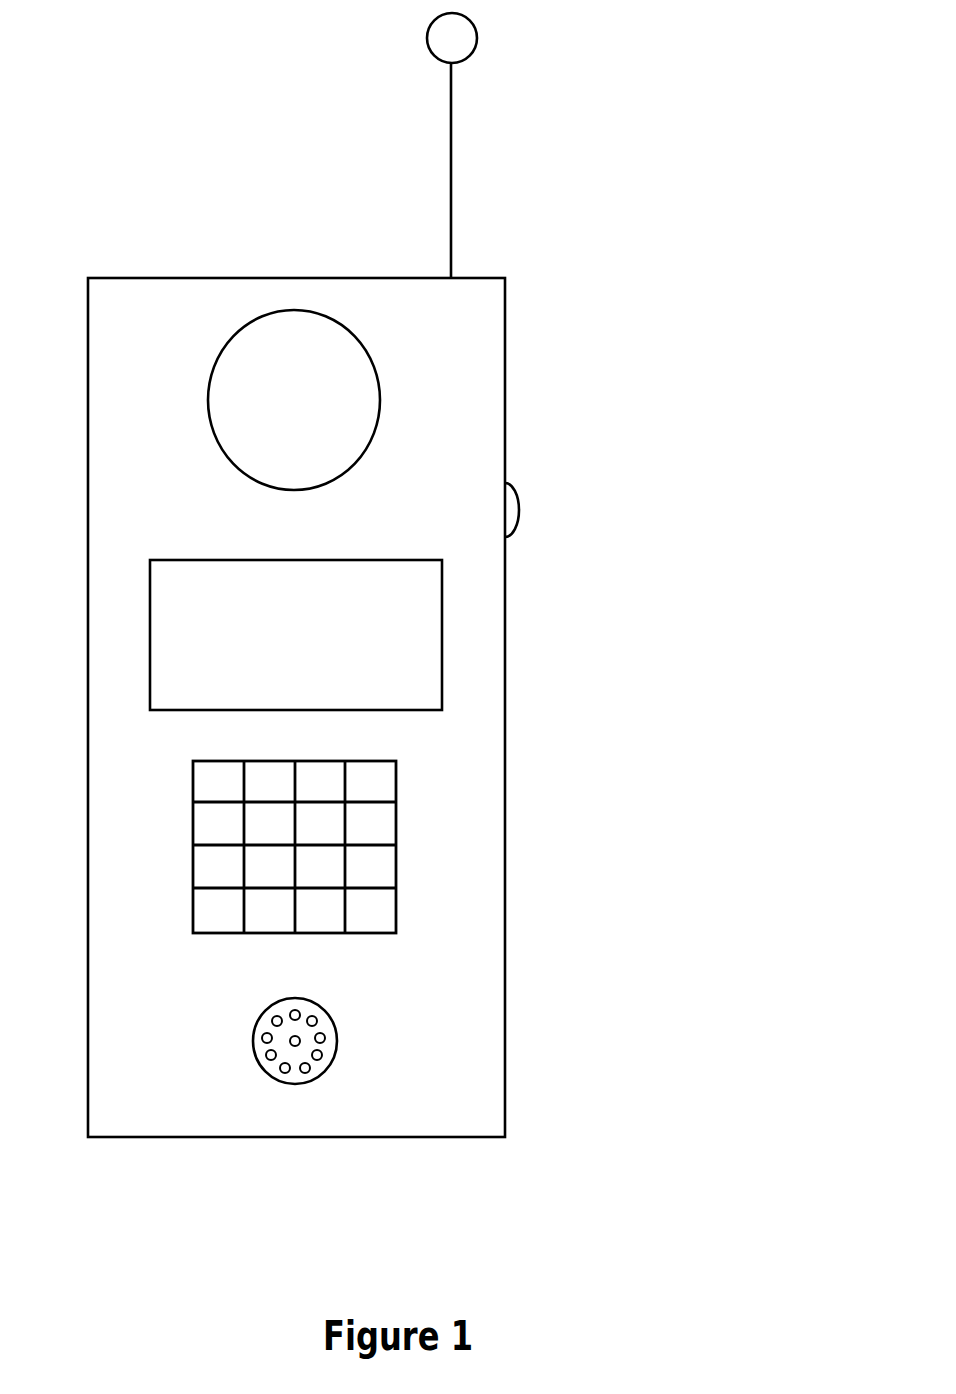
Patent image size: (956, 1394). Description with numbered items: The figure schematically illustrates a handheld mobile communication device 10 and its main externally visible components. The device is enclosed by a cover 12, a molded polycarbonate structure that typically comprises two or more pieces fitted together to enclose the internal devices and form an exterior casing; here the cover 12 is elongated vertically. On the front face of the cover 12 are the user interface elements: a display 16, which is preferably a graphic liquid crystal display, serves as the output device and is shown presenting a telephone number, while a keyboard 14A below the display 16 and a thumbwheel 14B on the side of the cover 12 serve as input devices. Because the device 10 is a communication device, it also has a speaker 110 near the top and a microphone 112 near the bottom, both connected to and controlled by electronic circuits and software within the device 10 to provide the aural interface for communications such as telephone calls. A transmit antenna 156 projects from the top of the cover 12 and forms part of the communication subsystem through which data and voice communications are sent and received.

The handheld mobile communication device 10 is at (686, 666).
The cover 12 is at (180, 1120).
The keyboard 14A is at (397, 820).
The thumbwheel 14B is at (524, 522).
The display 16 is at (397, 638).
The speaker 110 is at (340, 383).
The microphone 112 is at (337, 1035).
The transmit antenna 156 is at (453, 140).